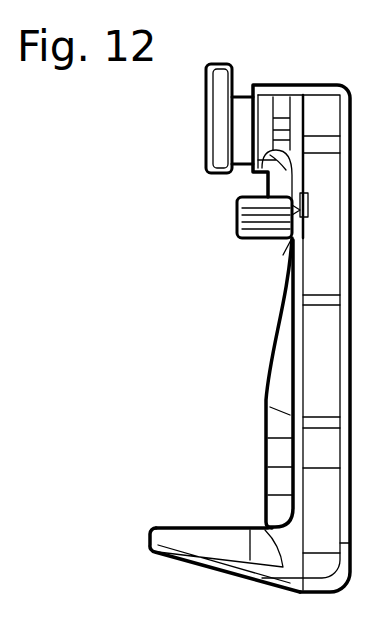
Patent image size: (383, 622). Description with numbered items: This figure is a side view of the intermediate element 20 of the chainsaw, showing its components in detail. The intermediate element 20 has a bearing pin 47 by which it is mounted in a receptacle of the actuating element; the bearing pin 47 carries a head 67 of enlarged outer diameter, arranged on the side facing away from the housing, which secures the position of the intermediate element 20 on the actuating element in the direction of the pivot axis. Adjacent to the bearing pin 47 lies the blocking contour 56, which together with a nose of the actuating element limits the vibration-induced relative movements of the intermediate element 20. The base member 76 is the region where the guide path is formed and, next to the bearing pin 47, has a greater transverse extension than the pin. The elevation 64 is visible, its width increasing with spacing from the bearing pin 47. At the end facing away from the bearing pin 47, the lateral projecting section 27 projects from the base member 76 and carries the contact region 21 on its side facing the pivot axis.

The intermediate element 20 is at (165, 180).
The contact region 21 is at (239, 517).
The lateral projecting section 27 is at (212, 552).
The bearing pin 47 is at (239, 98).
The blocking contour 56 is at (250, 212).
The elevation 64 is at (273, 387).
The head 67 is at (222, 125).
The base member 76 is at (312, 330).